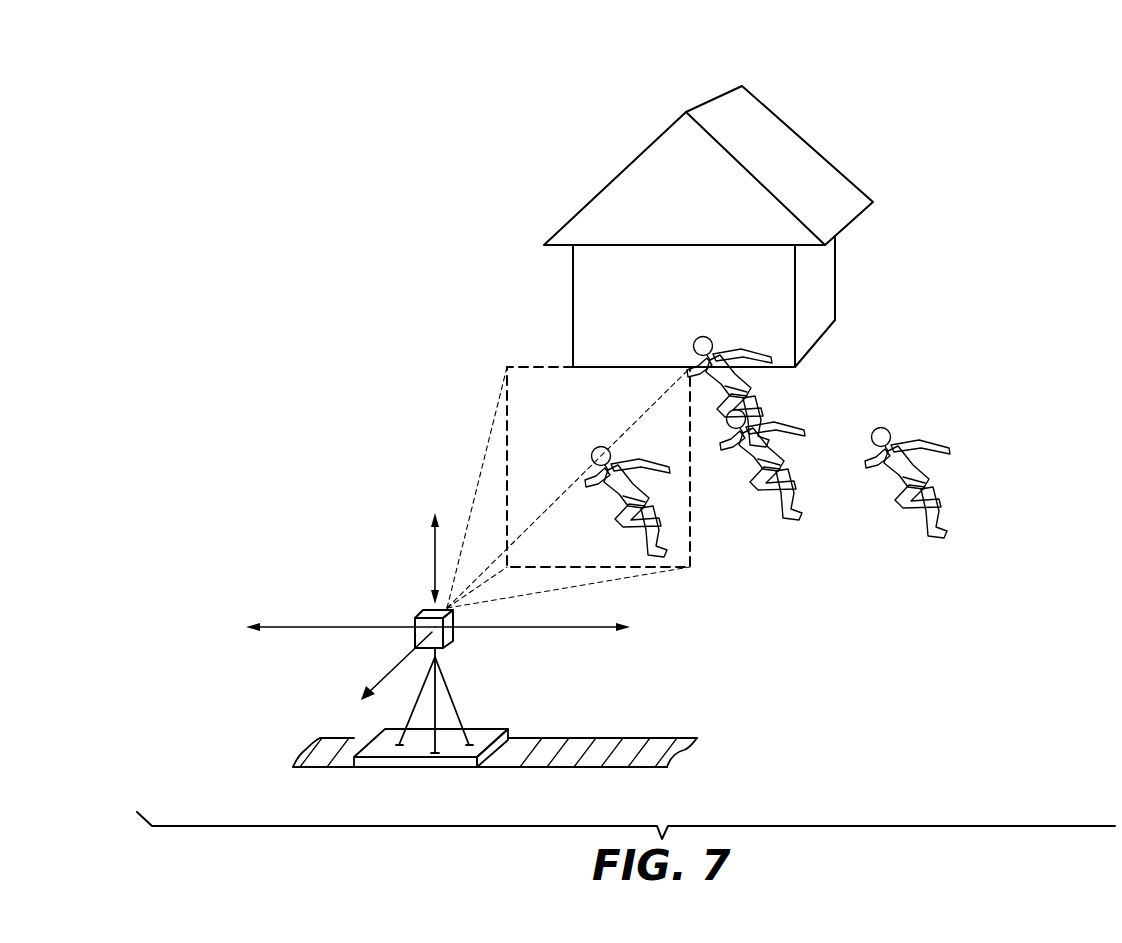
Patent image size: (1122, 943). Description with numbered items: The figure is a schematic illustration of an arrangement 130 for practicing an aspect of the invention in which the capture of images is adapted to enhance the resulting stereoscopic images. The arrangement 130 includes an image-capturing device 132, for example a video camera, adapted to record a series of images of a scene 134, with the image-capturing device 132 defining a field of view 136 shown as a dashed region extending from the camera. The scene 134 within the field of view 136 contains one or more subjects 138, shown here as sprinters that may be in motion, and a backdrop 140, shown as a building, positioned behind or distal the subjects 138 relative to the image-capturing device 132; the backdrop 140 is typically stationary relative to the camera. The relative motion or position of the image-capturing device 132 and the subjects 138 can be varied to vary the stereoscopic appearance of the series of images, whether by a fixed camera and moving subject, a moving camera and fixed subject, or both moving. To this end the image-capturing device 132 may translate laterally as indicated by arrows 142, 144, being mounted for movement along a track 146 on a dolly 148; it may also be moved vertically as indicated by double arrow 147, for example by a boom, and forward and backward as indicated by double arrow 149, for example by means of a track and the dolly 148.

The arrangement 130 is at (352, 326).
The image-capturing device 132 is at (423, 615).
The scene 134 is at (984, 262).
The field of view 136 is at (533, 377).
The subjects 138 is at (652, 490).
The backdrop 140 is at (788, 137).
The arrow 142 is at (288, 628).
The arrow 144 is at (568, 628).
The track 146 is at (635, 742).
The double arrow 147 is at (432, 545).
The dolly 148 is at (483, 733).
The double arrow 149 is at (392, 673).